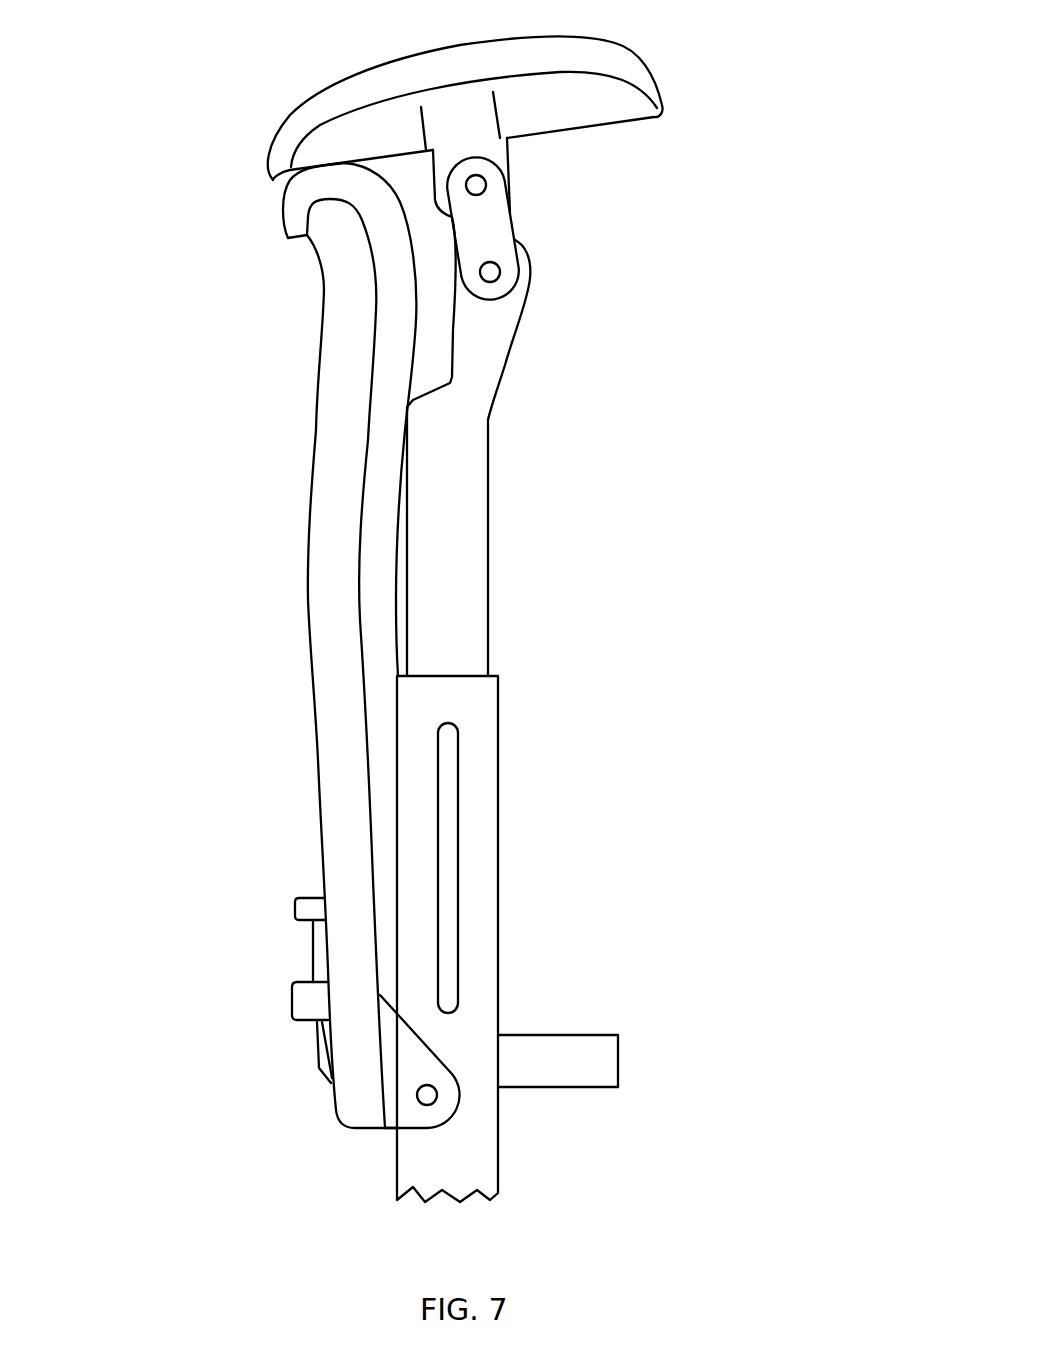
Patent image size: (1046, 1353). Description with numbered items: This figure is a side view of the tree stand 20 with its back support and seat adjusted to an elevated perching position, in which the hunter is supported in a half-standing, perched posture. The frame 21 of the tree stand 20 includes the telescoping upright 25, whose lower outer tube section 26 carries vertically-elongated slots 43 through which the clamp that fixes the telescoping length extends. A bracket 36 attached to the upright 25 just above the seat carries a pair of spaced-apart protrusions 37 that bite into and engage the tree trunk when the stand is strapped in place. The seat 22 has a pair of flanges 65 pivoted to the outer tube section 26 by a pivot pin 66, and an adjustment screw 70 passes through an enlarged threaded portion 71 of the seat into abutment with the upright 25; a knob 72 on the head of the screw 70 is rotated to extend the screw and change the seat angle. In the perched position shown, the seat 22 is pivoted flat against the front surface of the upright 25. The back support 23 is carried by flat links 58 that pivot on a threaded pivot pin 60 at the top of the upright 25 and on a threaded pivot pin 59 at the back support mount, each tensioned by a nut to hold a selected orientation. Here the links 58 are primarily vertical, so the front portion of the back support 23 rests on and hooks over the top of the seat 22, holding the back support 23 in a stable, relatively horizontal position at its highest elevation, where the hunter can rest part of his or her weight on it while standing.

The tree stand 20 is at (158, 148).
The frame 21 is at (517, 1148).
The seat 22 is at (317, 392).
The back support 23 is at (635, 58).
The telescoping upright 25 is at (487, 1172).
The outer tube section 26 is at (397, 728).
The bracket 36 is at (597, 1035).
The protrusions 37 is at (602, 1078).
The vertically-elongated slots 43 is at (448, 862).
The flat links 58 is at (516, 227).
The threaded pivot pin 59 is at (493, 272).
The threaded pivot pin 60 is at (475, 184).
The flanges 65 is at (415, 1027).
The pivot pin 66 is at (428, 1088).
The adjustment screw 70 is at (275, 958).
The enlarged threaded portion 71 is at (292, 1000).
The knob 72 is at (294, 908).